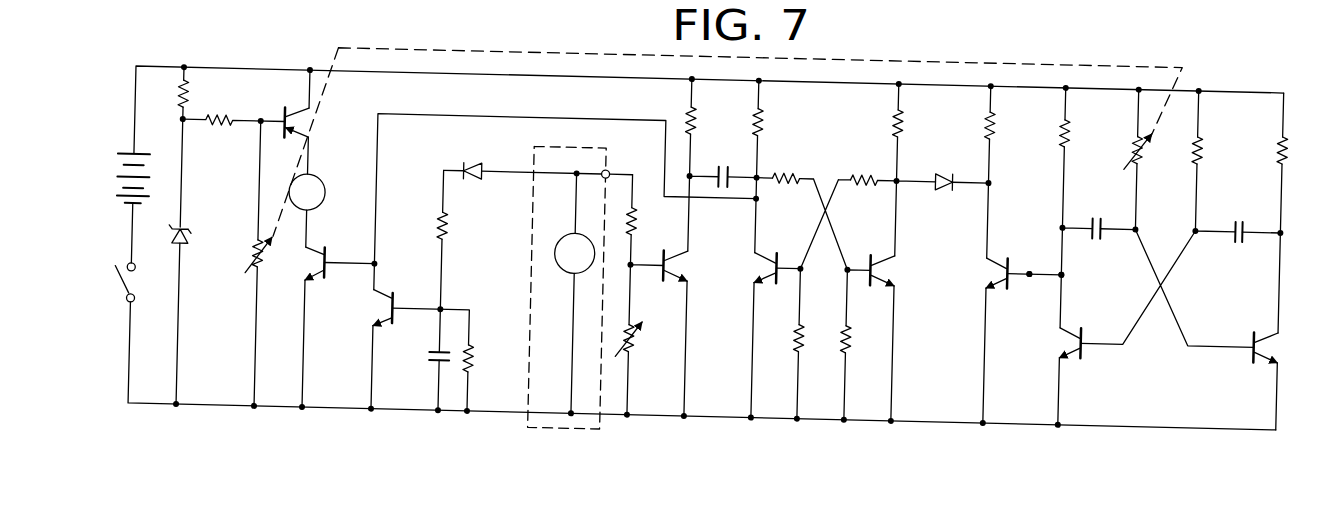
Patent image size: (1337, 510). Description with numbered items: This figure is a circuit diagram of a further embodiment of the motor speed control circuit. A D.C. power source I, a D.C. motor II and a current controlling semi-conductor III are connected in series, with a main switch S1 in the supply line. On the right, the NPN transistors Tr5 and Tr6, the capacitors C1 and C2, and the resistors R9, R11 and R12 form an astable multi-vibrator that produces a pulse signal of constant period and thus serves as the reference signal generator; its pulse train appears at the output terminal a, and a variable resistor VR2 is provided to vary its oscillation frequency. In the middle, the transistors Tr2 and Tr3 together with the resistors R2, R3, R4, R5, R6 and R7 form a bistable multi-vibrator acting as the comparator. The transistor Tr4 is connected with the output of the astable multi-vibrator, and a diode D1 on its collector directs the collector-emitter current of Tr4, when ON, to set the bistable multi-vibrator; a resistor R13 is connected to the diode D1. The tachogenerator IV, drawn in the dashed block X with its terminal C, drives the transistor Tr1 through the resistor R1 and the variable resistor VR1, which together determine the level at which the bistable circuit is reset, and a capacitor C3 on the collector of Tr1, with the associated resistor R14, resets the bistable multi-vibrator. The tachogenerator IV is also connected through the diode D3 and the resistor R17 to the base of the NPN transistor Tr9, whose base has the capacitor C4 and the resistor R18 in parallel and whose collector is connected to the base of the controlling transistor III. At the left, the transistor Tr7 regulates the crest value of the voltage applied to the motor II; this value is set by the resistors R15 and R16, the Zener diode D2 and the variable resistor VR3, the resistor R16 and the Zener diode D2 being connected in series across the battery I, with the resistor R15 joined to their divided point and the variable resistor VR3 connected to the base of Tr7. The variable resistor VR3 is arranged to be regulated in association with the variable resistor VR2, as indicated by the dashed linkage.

The D.C. power source I is at (150, 176).
The main switch S1 is at (124, 291).
The resistor R16 is at (199, 93).
The resistor R15 is at (233, 133).
The Zener diode D2 is at (194, 231).
The transistor Tr7 is at (307, 124).
The D.C. motor II is at (311, 171).
The current controlling semi-conductor III is at (320, 244).
The variable resistor VR3 is at (272, 259).
The NPN transistor Tr9 is at (380, 303).
The diode D3 is at (472, 158).
The resistor R17 is at (459, 227).
The capacitor C4 is at (422, 358).
The resistor R18 is at (482, 358).
The speed detector unit X is at (564, 424).
The terminal C is at (628, 157).
The tachogenerator IV is at (565, 232).
The resistor R1 is at (643, 223).
The variable resistor VR1 is at (639, 341).
The NPN transistor Tr1 is at (688, 250).
The resistor R14 is at (708, 119).
The capacitor C3 is at (722, 164).
The resistor R2 is at (772, 121).
The NPN transistor Tr2 is at (775, 260).
The resistor R4 is at (786, 165).
The resistor R5 is at (862, 166).
The resistor R6 is at (810, 341).
The resistor R7 is at (857, 341).
The NPN transistor Tr3 is at (897, 250).
The resistor R3 is at (915, 123).
The diode D1 is at (939, 168).
The resistor R13 is at (1007, 125).
The NPN transistor Tr4 is at (1005, 262).
The output terminal a is at (1085, 265).
The resistor R9 is at (1080, 129).
The capacitor C1 is at (1094, 214).
The variable resistor VR2 is at (1153, 153).
The resistor R11 is at (1212, 150).
The capacitor C2 is at (1237, 218).
The resistor R12 is at (1299, 150).
The NPN transistor Tr5 is at (1082, 322).
The NPN transistor Tr6 is at (1266, 322).